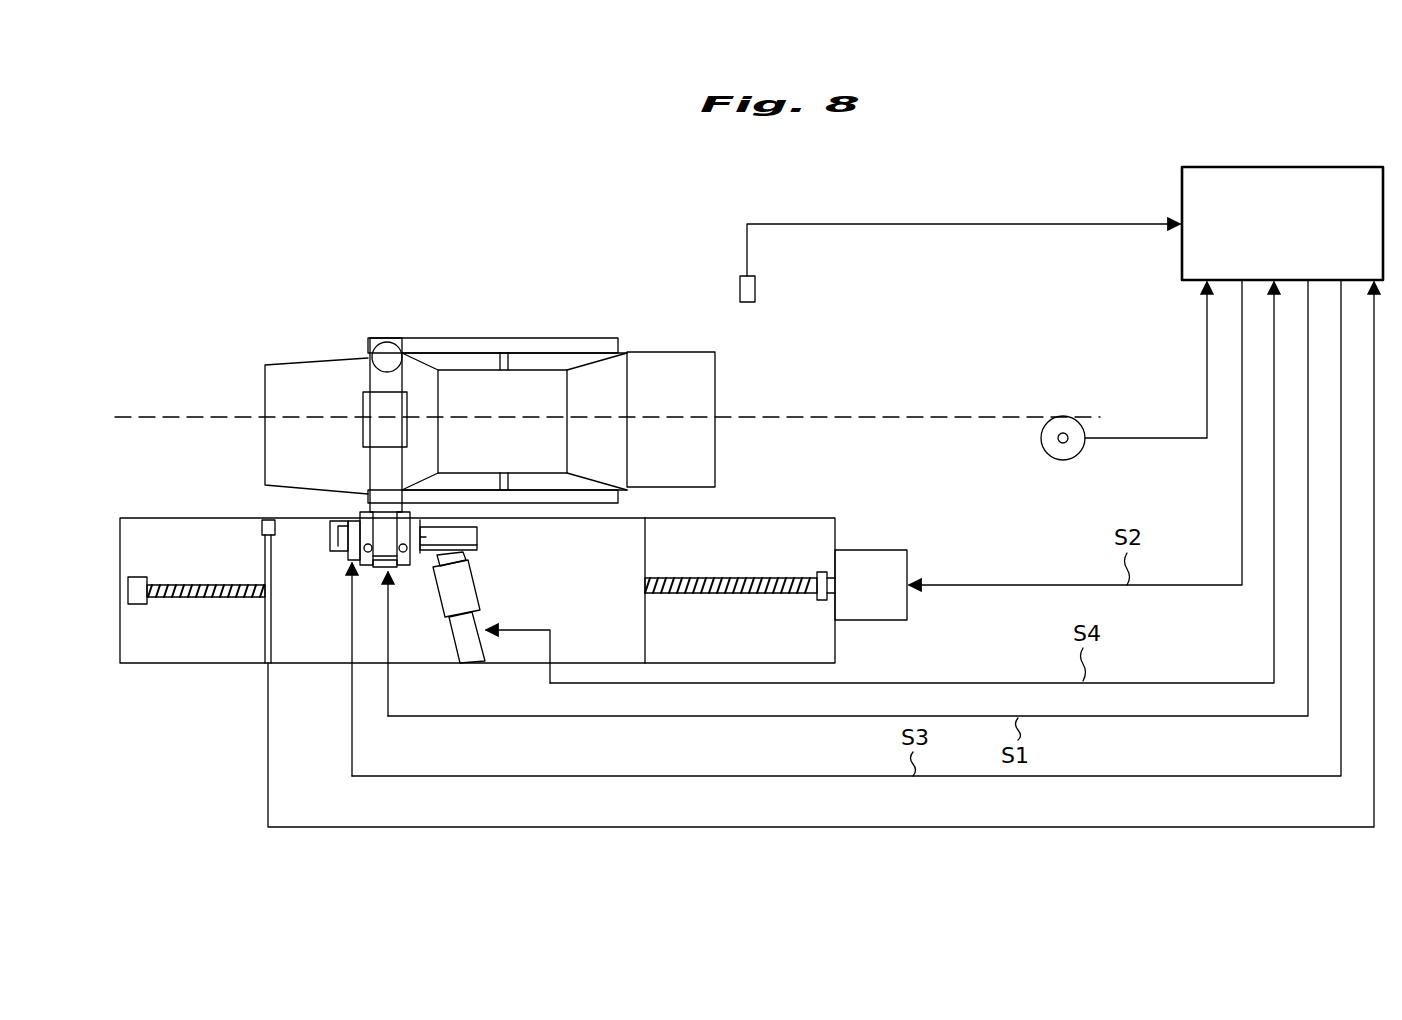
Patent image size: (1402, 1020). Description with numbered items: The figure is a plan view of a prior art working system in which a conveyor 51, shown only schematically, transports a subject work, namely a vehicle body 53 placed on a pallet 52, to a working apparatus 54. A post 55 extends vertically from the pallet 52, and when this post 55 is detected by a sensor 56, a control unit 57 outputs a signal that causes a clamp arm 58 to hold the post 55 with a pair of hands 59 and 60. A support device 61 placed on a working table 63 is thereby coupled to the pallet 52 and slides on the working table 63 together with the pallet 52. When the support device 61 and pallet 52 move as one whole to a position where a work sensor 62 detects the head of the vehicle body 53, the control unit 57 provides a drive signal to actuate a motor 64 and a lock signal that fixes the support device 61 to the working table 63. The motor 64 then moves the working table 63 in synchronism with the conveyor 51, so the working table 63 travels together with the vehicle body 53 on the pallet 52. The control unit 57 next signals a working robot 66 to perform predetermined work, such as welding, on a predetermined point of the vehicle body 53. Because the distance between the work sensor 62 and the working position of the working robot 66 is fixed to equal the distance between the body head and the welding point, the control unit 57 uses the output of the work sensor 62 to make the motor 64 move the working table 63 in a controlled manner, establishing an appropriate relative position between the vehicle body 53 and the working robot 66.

The conveyor 51 is at (890, 415).
The pallet 52 is at (493, 338).
The vehicle body 53 is at (678, 355).
The working apparatus 54 is at (118, 668).
The post 55 is at (388, 350).
The sensor 56 is at (755, 291).
The control unit 57 is at (1275, 167).
The clamp arm 58 is at (412, 580).
The hand 59 is at (360, 508).
The hand 60 is at (435, 535).
The support device 61 is at (371, 584).
The work sensor 62 is at (266, 520).
The working table 63 is at (635, 644).
The motor 64 is at (908, 612).
The working robot 66 is at (470, 590).